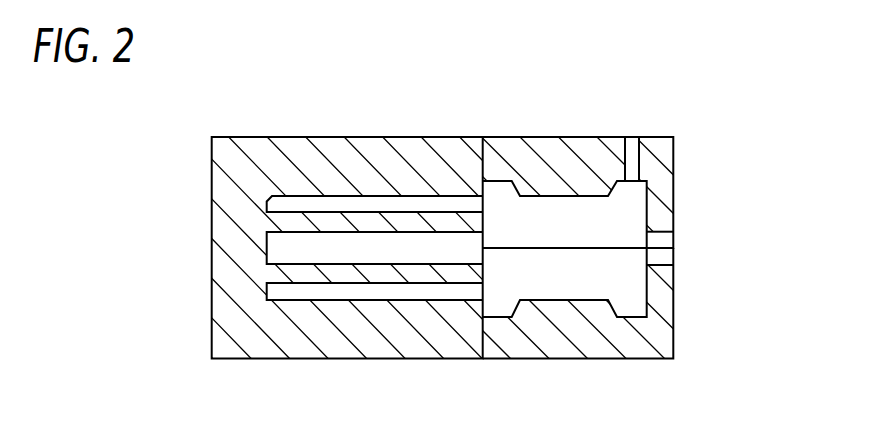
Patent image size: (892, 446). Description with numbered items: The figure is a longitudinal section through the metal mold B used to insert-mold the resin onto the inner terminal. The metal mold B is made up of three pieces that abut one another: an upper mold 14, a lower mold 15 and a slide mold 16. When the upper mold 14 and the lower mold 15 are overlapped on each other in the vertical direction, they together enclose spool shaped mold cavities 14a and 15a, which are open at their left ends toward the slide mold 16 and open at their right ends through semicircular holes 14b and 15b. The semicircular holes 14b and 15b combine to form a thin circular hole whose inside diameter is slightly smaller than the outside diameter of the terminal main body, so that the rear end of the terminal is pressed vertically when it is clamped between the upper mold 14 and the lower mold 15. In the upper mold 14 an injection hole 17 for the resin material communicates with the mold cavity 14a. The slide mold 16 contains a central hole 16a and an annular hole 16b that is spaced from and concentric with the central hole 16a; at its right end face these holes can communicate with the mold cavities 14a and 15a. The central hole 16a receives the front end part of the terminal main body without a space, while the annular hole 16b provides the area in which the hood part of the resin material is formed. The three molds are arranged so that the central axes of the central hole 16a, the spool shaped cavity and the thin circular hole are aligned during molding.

The upper mold 14 is at (691, 147).
The mold cavity 14a is at (552, 203).
The semicircular hole 14b is at (667, 240).
The lower mold 15 is at (693, 333).
The mold cavity 15a is at (563, 298).
The semicircular hole 15b is at (667, 258).
The slide mold 16 is at (348, 122).
The central hole 16a is at (291, 234).
The annular hole 16b is at (443, 197).
The injection hole 17 is at (632, 166).
The metal mold B is at (470, 103).